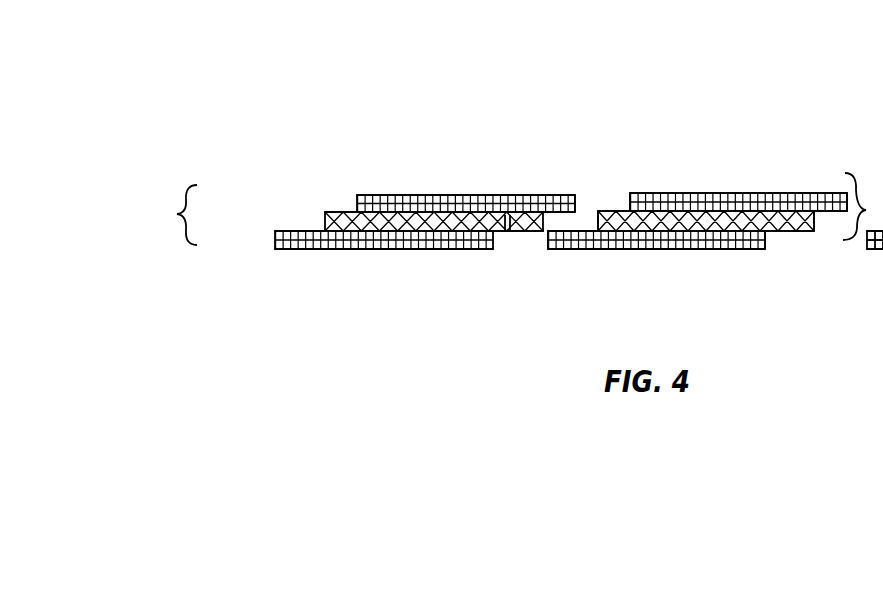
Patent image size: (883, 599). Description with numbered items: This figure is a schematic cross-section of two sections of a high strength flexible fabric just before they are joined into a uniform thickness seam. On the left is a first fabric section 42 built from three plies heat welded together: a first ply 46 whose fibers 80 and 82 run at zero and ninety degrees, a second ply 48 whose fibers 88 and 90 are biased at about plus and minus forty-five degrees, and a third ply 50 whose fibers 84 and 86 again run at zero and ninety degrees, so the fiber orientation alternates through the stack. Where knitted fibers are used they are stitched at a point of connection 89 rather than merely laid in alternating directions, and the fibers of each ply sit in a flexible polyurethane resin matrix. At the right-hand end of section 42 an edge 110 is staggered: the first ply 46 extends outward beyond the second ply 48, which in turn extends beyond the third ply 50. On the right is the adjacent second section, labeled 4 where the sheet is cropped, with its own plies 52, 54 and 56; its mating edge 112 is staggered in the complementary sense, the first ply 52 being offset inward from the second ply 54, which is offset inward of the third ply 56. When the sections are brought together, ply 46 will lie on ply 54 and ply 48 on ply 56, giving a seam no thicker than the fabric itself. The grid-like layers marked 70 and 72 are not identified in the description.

The flexible circuit assembly 4 is at (863, 211).
The first fabric section 42 is at (173, 215).
The first ply 46 is at (562, 195).
The second ply 48 is at (325, 217).
The third ply 50 is at (285, 250).
The first ply 52 is at (847, 193).
The second ply 54 is at (814, 232).
The third ply 56 is at (753, 249).
The conductive grid layer 70 is at (413, 195).
The adhesive layer edge 72 is at (335, 212).
The fiber 80 is at (499, 195).
The fiber 82 is at (513, 195).
The fiber 84 is at (363, 249).
The fiber 86 is at (398, 249).
The fiber 88 is at (505, 231).
The point of connection 89 is at (495, 217).
The fiber 90 is at (510, 231).
The edge 110 is at (578, 210).
The mating edge 112 is at (622, 193).